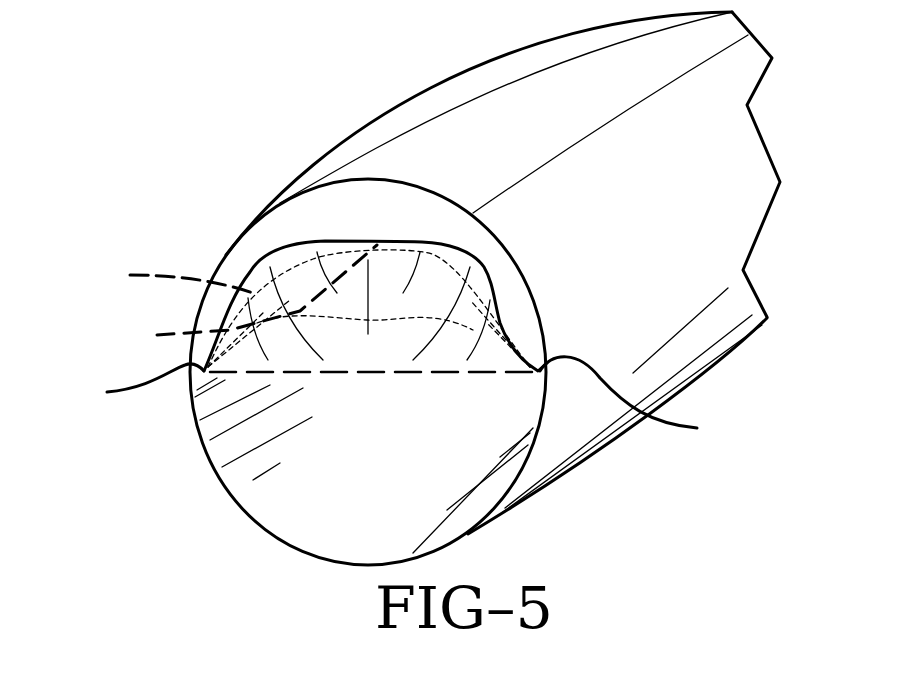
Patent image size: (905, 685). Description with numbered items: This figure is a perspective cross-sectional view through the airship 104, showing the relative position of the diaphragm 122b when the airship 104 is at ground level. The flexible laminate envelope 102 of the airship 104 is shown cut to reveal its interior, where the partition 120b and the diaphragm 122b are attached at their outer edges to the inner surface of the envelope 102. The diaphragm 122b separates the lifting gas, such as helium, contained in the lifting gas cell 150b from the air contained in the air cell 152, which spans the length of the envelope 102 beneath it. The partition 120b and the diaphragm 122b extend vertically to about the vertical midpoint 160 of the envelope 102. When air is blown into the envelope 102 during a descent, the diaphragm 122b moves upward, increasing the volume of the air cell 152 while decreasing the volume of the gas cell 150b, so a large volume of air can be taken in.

The envelope 102 is at (563, 452).
The airship 104 is at (468, 132).
The partition 120b is at (155, 277).
The diaphragm 122b is at (227, 299).
The lifting gas cell 150b is at (357, 226).
The air cell 152 is at (378, 345).
The vertical midpoint 160 is at (402, 400).